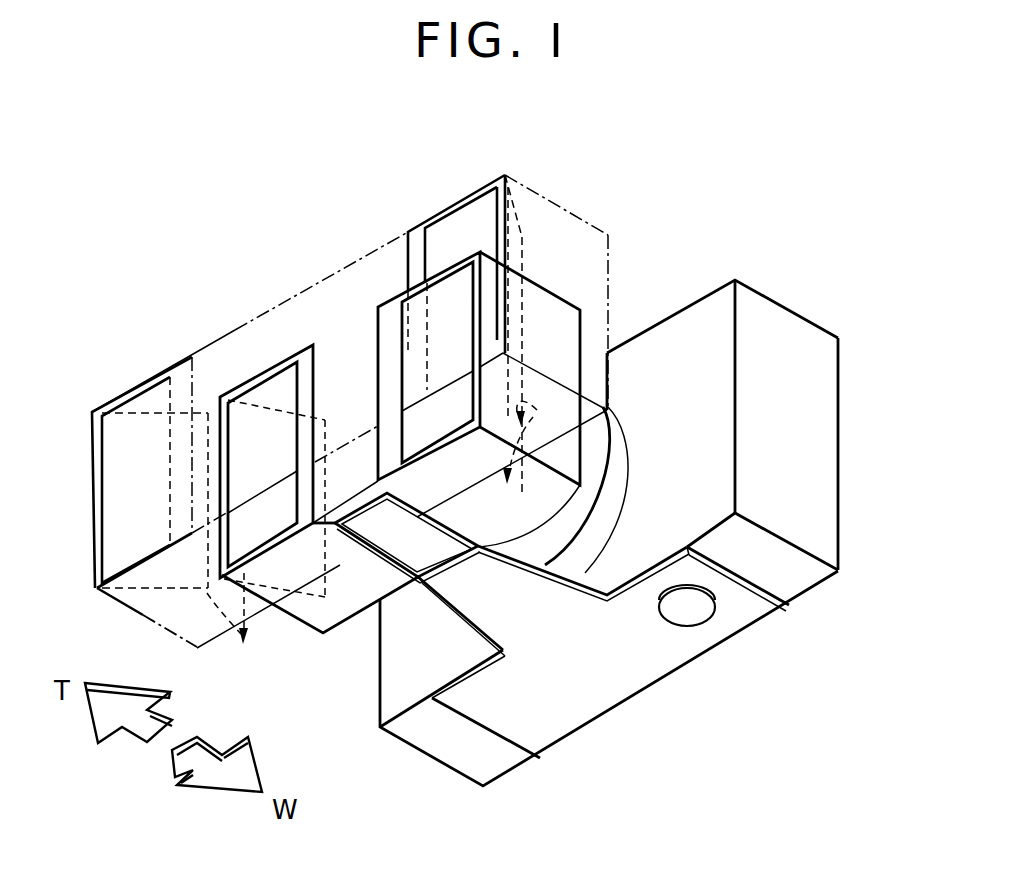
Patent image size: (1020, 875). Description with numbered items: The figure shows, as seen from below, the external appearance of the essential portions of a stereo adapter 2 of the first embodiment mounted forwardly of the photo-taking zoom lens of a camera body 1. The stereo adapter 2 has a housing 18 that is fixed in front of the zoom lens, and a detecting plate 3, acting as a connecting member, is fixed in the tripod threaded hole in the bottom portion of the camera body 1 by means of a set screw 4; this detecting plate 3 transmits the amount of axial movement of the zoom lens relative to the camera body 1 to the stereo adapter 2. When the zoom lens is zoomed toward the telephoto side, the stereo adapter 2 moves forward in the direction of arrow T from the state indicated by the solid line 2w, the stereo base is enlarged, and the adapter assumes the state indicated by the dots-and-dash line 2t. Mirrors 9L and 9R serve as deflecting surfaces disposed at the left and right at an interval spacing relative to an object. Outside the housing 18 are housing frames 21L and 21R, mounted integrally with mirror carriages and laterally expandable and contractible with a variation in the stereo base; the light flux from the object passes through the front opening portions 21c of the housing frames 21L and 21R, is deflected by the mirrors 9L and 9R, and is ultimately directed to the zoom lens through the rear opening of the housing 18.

The camera body 1 is at (830, 540).
The stereo adapter 2 is at (633, 222).
The detecting plate 3 is at (635, 680).
The set screw 4 is at (703, 613).
The mirror 9L is at (540, 440).
The mirror 9R is at (266, 538).
The housing 18 is at (350, 337).
The housing frame 21L is at (396, 295).
The housing frame 21R is at (296, 364).
The front opening portion 21c is at (245, 395).
The dots-and-dash line 2t is at (112, 598).
The solid line 2w is at (317, 618).